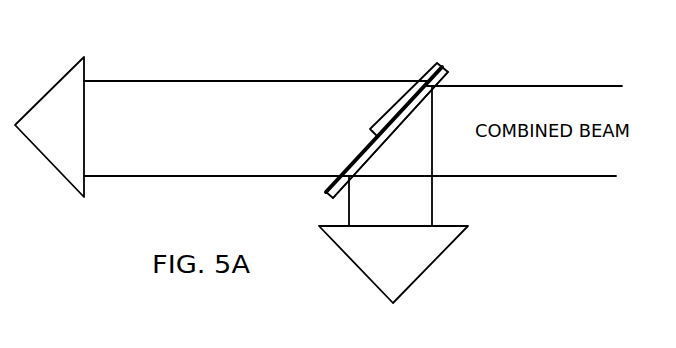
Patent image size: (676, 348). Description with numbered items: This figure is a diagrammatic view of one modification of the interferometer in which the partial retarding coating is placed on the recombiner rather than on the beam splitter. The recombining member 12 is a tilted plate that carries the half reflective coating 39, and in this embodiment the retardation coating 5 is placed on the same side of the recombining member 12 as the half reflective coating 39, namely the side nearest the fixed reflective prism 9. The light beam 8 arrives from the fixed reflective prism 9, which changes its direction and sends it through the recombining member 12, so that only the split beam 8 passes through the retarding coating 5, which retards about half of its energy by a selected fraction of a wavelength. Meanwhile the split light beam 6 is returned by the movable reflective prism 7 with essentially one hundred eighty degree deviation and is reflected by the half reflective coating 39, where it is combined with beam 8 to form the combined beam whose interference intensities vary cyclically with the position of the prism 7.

The retardation coating 5 is at (418, 75).
The split light beam 6 is at (432, 193).
The reflective prism 7 is at (442, 256).
The light beam 8 is at (213, 80).
The reflective prism 9 is at (58, 84).
The recombining member 12 is at (452, 82).
The half reflective coating 39 is at (451, 79).